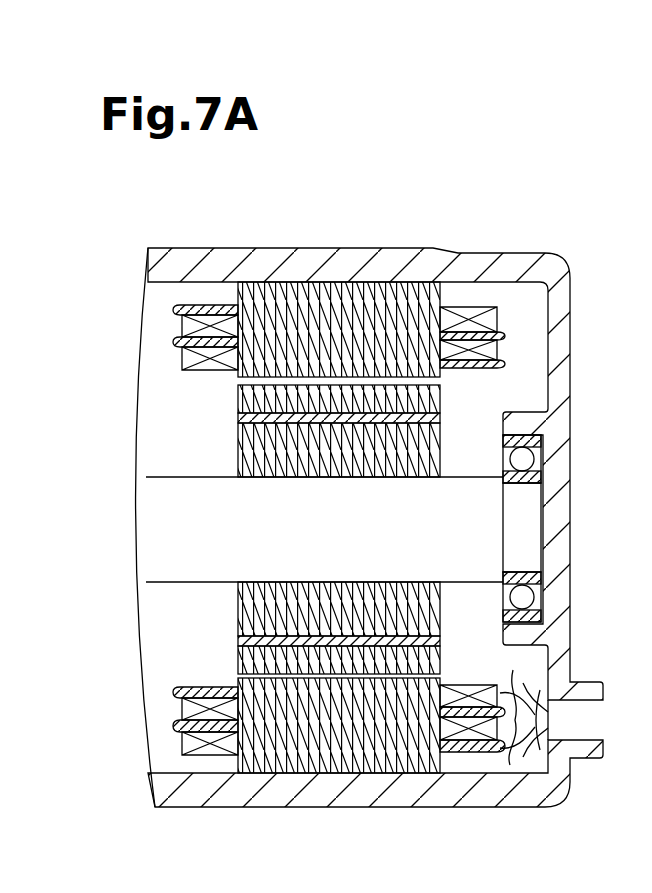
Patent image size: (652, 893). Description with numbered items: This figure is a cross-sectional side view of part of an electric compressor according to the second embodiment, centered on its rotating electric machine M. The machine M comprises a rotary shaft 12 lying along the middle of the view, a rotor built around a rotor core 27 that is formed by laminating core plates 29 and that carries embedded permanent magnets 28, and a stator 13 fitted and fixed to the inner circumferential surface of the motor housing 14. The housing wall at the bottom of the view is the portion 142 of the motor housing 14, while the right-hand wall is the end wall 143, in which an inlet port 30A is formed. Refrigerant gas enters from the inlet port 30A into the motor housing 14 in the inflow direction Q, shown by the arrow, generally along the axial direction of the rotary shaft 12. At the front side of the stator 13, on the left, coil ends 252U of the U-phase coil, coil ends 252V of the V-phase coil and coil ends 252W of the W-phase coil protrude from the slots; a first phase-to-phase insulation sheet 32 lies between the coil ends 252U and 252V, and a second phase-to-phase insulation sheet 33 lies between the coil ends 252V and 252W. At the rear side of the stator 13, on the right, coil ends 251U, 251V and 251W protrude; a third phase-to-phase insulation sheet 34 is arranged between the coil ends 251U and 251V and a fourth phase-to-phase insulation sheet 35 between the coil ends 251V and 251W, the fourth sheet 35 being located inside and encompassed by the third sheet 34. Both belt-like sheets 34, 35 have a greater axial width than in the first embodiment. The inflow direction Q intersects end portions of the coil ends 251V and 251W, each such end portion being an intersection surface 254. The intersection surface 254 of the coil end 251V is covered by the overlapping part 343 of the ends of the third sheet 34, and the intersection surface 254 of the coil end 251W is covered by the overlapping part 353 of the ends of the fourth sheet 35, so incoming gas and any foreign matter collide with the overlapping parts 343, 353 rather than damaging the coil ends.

The rotating electric machine M is at (249, 216).
The rotary shaft 12 is at (161, 573).
The stator 13 is at (273, 529).
The motor housing 14 is at (383, 532).
The rotor core 27 is at (236, 440).
The permanent magnets 28 is at (233, 418).
The core plates 29 is at (299, 529).
The inlet port 30A is at (597, 748).
The first phase-to-phase insulation sheet 32 is at (193, 308).
The second phase-to-phase insulation sheet 33 is at (180, 341).
The third phase-to-phase insulation sheet 34 is at (505, 345).
The fourth phase-to-phase insulation sheet 35 is at (507, 367).
The housing bottom wall 142 is at (282, 790).
The end wall 143 is at (558, 582).
The coil ends of the U-phase coil 251U is at (470, 308).
The coil ends of the V-phase coil 251V is at (468, 745).
The coil ends of the W-phase coil 251W is at (453, 352).
The coil ends of the U-phase coil 252U is at (205, 752).
The coil ends of the V-phase coil 252V is at (180, 326).
The coil ends of the W-phase coil 252W is at (202, 363).
The intersection surface 254 is at (513, 670).
The overlapping part 343 is at (552, 790).
The overlapping part 353 is at (543, 690).
The inflow direction Q is at (549, 726).